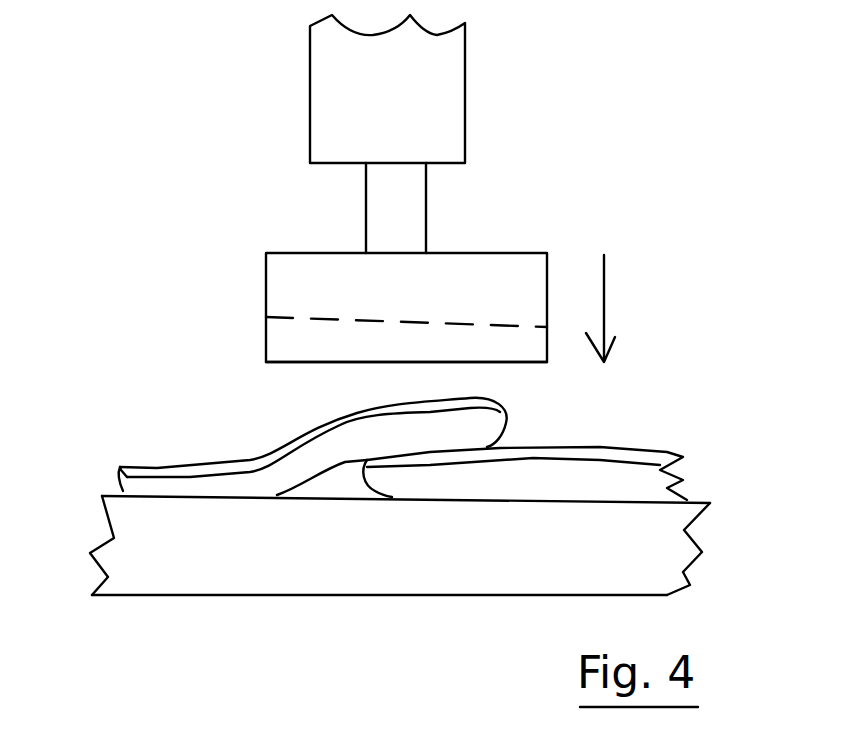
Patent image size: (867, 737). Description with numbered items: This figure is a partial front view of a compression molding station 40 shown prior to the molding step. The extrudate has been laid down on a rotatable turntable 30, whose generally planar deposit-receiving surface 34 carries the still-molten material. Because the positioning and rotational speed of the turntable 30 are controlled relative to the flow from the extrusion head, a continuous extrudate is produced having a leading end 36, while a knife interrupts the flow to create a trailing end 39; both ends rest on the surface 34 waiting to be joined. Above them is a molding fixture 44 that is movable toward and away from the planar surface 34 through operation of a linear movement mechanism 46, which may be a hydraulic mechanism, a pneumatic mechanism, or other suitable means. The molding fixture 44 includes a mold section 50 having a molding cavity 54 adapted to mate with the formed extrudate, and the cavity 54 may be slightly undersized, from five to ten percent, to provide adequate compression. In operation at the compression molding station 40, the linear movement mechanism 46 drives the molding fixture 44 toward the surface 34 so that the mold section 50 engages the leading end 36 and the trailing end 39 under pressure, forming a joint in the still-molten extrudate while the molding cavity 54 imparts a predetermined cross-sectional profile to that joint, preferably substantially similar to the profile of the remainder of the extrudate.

The rotatable turntable 30 is at (310, 572).
The deposit-receiving surface 34 is at (697, 502).
The leading end 36 is at (408, 488).
The trailing end 39 is at (490, 427).
The compression molding station 40 is at (127, 218).
The molding fixture 44 is at (447, 262).
The linear movement mechanism 46 is at (447, 97).
The mold section 50 is at (283, 292).
The molding cavity 54 is at (315, 343).